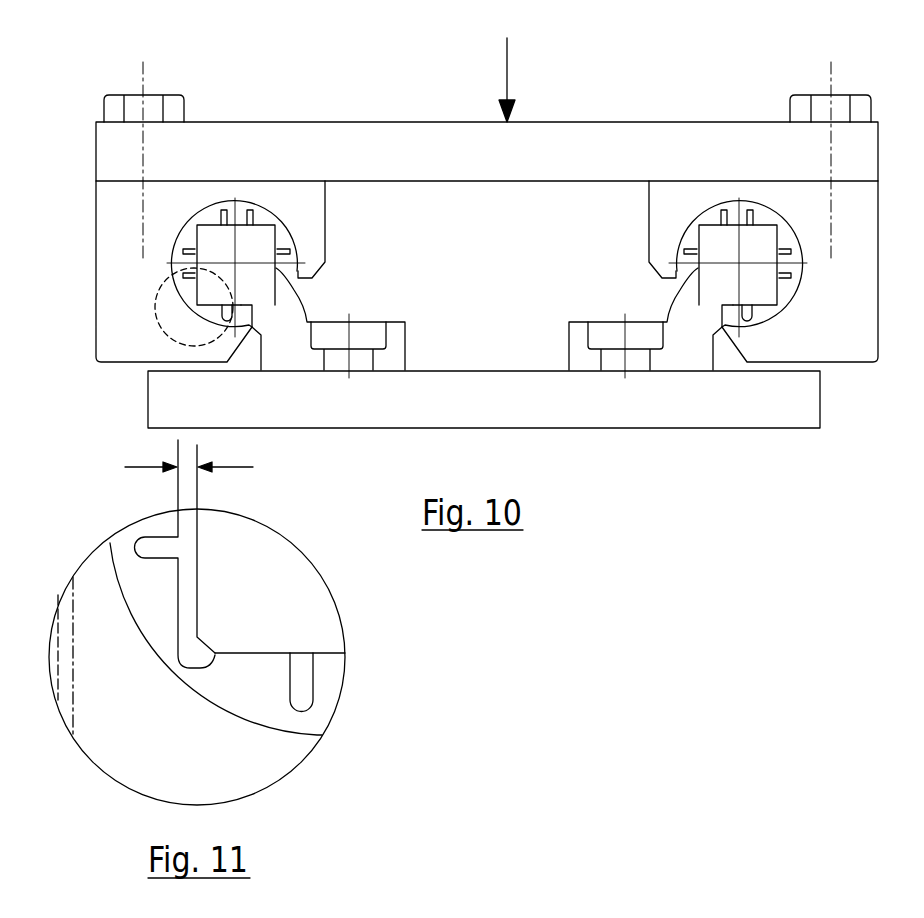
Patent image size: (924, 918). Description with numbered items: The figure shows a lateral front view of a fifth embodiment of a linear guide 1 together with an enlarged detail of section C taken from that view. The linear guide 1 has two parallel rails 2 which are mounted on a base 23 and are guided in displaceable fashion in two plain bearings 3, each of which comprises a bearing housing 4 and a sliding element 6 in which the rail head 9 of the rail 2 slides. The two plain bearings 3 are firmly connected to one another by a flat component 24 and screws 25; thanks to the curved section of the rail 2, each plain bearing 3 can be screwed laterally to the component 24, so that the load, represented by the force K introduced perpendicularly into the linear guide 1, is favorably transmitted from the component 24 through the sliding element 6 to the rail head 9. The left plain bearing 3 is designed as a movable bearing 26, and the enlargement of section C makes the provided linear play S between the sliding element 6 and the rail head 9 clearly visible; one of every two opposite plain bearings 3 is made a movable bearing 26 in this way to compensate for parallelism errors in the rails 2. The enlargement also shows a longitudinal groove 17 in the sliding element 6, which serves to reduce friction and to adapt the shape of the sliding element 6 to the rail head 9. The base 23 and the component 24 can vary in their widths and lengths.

In FIG. 10, the linear guide 1 is at (487, 279).
In FIG. 10, the rail 2 is at (277, 315).
In FIG. 10, the plain bearing 3 is at (487, 271).
In FIG. 11, the bearing housing 4 is at (105, 697).
In FIG. 11, the sliding element 6 is at (254, 699).
In FIG. 11, the rail head 9 is at (247, 600).
In FIG. 11, the longitudinal groove 17 is at (303, 680).
In FIG. 10, the base 23 is at (642, 411).
In FIG. 10, the flat component 24 is at (632, 156).
In FIG. 10, the screw 25 is at (832, 108).
In FIG. 10, the movable bearing 26 is at (168, 226).
In FIG. 10, the force K is at (518, 80).
In FIG. 11, the linear play S is at (189, 452).
In FIG. 10, the section C is at (160, 328).